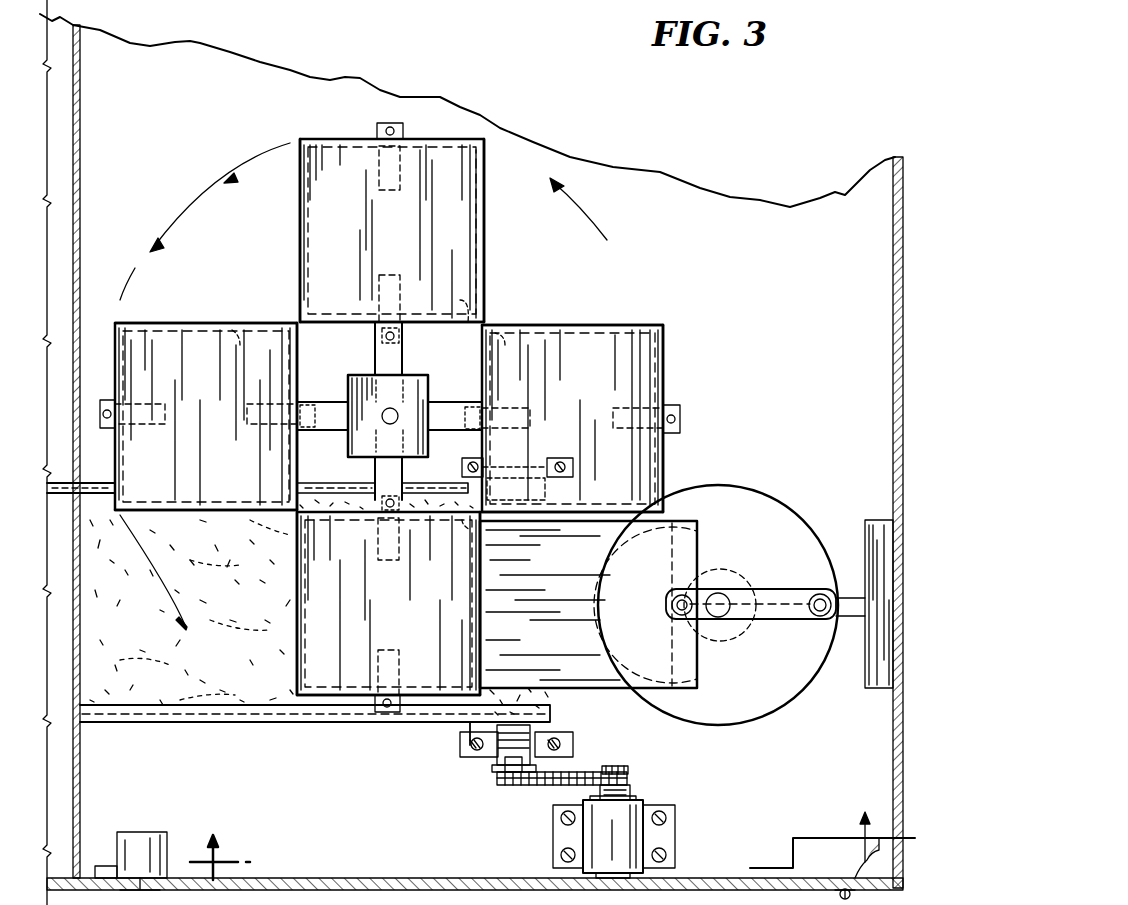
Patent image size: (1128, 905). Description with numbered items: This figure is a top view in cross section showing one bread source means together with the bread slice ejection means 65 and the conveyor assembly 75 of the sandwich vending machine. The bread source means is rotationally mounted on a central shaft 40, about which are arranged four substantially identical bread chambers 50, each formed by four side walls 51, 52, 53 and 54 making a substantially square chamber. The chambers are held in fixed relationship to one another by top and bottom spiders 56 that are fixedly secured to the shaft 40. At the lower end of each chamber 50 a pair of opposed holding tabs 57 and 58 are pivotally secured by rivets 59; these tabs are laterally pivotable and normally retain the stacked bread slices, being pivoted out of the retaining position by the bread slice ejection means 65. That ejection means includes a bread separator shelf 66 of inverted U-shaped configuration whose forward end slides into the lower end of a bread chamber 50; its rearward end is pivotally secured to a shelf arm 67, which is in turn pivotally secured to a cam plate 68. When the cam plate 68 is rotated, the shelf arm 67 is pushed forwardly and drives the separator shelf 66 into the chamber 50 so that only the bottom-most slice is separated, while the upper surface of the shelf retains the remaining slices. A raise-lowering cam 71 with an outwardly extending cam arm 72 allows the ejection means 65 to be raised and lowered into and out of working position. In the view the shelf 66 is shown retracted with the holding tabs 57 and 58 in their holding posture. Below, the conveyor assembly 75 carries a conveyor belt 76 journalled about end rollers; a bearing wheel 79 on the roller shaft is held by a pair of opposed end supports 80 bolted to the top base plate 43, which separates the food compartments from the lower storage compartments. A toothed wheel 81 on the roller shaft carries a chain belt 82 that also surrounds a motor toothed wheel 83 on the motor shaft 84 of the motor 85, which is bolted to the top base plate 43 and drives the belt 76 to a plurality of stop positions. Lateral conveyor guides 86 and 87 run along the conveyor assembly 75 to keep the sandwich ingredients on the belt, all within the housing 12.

The housing 12 is at (430, 878).
The shaft 40 is at (388, 412).
The top base plate 43 is at (310, 810).
The bread chamber 50 is at (470, 190).
The side wall 51 is at (300, 139).
The side wall 52 is at (300, 200).
The side wall 53 is at (455, 322).
The side wall 54 is at (484, 260).
The spider 56 is at (358, 465).
The holding tab 57 is at (380, 170).
The holding tab 58 is at (412, 290).
The rivet 59 is at (386, 124).
The bread slice ejection means 65 is at (763, 496).
The bread separator shelf 66 is at (582, 665).
The shelf arm 67 is at (787, 612).
The cam plate 68 is at (790, 690).
The raise-lowering cam 71 is at (878, 522).
The cam arm 72 is at (850, 618).
The conveyor assembly 75 is at (222, 722).
The conveyor belt 76 is at (128, 631).
The bearing wheel 79 is at (520, 462).
The end support 80 is at (460, 468).
The toothed wheel 81 is at (500, 768).
The chain belt 82 is at (560, 786).
The motor toothed wheel 83 is at (625, 771).
The motor shaft 84 is at (640, 795).
The motor 85 is at (605, 832).
The lateral conveyor guide 86 is at (135, 722).
The lateral conveyor guide 87 is at (112, 493).